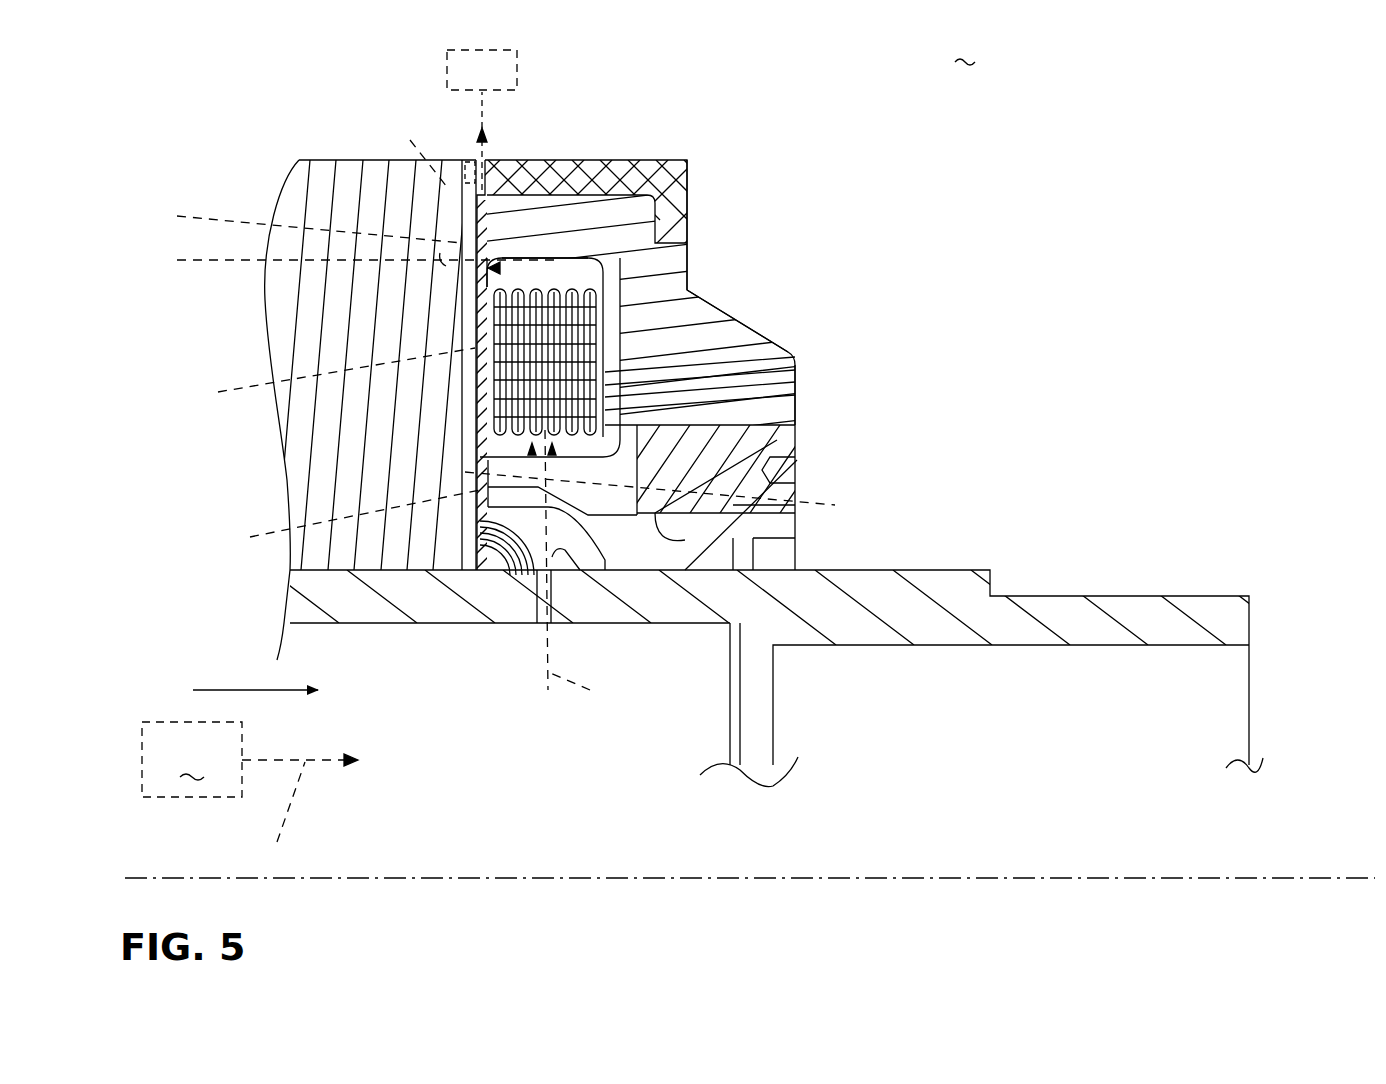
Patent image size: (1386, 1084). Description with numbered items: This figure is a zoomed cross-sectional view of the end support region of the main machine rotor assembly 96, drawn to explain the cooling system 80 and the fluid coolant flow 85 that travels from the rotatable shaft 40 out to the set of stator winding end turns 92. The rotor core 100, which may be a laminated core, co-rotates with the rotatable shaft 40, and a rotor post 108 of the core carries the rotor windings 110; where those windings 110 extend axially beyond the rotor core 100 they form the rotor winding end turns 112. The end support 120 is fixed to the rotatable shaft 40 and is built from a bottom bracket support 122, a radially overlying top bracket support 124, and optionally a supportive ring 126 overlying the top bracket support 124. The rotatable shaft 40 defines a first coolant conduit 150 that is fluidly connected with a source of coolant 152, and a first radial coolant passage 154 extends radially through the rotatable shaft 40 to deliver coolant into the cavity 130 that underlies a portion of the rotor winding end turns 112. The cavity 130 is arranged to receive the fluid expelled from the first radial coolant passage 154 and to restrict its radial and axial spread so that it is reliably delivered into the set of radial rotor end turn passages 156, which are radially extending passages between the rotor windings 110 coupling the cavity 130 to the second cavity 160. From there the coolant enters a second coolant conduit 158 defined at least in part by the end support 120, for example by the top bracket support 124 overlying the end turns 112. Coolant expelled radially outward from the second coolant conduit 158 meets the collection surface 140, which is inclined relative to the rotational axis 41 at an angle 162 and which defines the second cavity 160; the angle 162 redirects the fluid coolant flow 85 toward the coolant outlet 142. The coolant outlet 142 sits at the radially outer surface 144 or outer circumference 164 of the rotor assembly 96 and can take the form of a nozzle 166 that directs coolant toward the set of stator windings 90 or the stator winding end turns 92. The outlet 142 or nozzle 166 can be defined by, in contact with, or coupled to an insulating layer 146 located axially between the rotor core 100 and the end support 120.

The rotatable shaft 40 is at (1251, 690).
The rotational axis 41 is at (962, 878).
The cooling system 80 is at (764, 310).
The fluid coolant flow 85 is at (522, 490).
The set of stator windings 90 is at (482, 70).
The set of stator winding end turns 92 is at (504, 92).
The main machine rotor assembly 96 is at (964, 51).
The rotor core 100 is at (344, 156).
The rotor post 108 is at (386, 158).
The rotor windings 110 is at (609, 380).
The rotor winding end turns 112 is at (609, 408).
The end support 120 is at (819, 329).
The bottom bracket support 122 is at (797, 486).
The top bracket support 124 is at (714, 300).
The supportive ring 126 is at (690, 165).
The cavity 130 is at (655, 465).
The collection surface 140 is at (572, 262).
The coolant outlet 142 is at (484, 197).
The radially outer surface 144 is at (562, 184).
The insulating layer 146 is at (485, 450).
The first coolant conduit 150 is at (234, 690).
The source of coolant 152 is at (250, 759).
The first radial coolant passage 154 is at (560, 592).
The set of radial rotor end turn passages 156 is at (552, 437).
The second coolant conduit 158 is at (490, 248).
The second cavity 160 is at (562, 273).
The angle 162 is at (440, 253).
The outer circumference 164 is at (507, 149).
The nozzle 166 is at (467, 160).